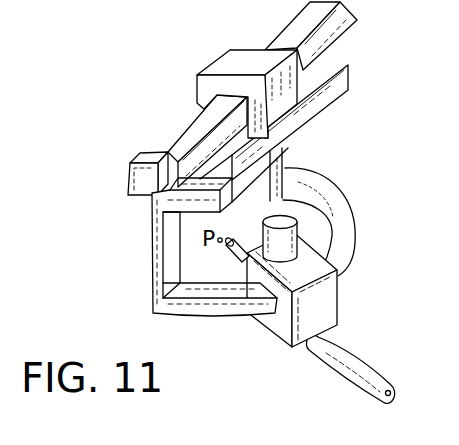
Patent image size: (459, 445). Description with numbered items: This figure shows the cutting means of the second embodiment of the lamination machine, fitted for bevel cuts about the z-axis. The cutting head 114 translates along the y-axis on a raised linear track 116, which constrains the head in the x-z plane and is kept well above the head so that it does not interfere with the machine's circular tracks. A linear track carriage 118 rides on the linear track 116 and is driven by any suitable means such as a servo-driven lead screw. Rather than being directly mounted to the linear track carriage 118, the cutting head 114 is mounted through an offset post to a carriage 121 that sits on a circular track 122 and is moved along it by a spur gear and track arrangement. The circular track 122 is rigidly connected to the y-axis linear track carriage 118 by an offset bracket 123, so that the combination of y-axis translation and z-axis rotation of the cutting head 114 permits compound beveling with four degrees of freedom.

The cutting head 114 is at (270, 340).
The linear track 116 is at (352, 35).
The linear track carriage 118 is at (196, 90).
The carriage 121 is at (340, 307).
The circular track 122 is at (348, 208).
The offset bracket 123 is at (340, 98).